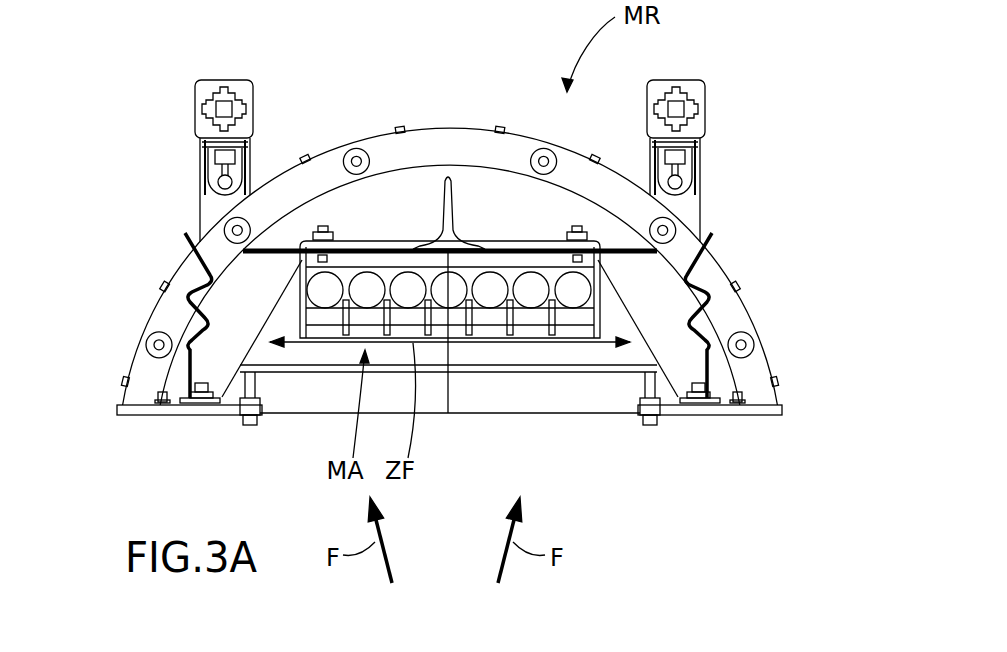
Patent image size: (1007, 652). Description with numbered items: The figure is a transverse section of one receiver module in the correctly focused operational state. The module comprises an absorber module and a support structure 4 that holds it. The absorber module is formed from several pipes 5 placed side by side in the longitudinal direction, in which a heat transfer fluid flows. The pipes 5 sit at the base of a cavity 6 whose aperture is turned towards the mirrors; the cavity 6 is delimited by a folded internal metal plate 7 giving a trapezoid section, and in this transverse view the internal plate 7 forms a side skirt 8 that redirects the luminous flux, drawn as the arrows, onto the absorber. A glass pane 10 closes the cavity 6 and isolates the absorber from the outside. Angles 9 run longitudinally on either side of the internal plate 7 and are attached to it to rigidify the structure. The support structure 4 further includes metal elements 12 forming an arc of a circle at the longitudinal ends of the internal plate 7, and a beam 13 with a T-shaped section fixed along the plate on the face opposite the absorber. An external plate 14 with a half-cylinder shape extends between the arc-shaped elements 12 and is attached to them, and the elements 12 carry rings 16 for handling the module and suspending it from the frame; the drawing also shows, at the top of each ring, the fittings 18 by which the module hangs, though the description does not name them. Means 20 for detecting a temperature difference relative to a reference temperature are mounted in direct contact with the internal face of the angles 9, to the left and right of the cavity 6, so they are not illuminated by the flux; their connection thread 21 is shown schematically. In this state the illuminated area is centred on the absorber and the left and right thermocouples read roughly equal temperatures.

The support structure 4 is at (410, 232).
The pipes 5 is at (497, 300).
The cavity 6 is at (315, 352).
The folded internal metal plate 7 is at (642, 363).
The side skirt 8 is at (268, 352).
The angles 9 is at (173, 418).
The glass pane 10 is at (460, 372).
The metal elements forming an arc of a circle 12 is at (432, 147).
The beam with a T-shaped section 13 is at (447, 230).
The external plate 14 is at (367, 137).
The rings 16 is at (208, 197).
The profile brackets 18 is at (225, 100).
The means for detecting a temperature difference 20 is at (205, 372).
The connection thread 21 is at (200, 278).